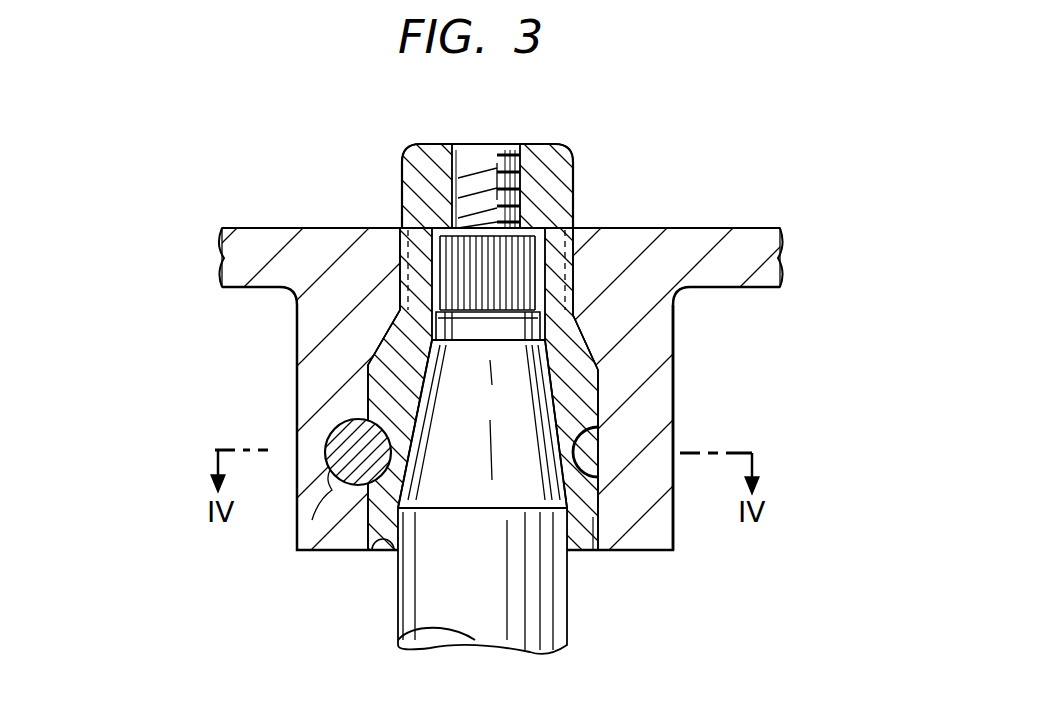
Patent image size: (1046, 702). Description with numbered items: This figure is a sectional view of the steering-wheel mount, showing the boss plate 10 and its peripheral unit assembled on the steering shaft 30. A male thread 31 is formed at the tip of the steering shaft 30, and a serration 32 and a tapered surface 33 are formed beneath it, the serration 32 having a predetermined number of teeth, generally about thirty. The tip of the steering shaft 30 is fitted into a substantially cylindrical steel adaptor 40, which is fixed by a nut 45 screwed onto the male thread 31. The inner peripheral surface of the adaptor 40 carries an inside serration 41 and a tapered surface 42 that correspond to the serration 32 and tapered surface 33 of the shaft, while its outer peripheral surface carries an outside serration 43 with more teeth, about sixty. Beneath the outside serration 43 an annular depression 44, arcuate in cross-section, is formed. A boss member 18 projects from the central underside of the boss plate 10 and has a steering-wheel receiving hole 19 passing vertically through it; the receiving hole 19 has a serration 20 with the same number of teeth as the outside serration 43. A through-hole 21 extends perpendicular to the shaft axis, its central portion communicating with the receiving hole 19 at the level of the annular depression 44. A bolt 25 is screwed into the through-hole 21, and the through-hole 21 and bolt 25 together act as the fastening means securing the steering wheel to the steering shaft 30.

The boss plate 10 is at (697, 230).
The boss member 18 is at (676, 385).
The steering-wheel receiving hole 19 is at (382, 550).
The serration 20 is at (588, 240).
The through-hole 21 is at (344, 436).
The bolt 25 is at (345, 470).
The steering shaft 30 is at (570, 613).
The male thread 31 is at (448, 168).
The serration 32 is at (418, 212).
The tapered surface 33 is at (370, 520).
The adaptor 40 is at (593, 517).
The inside serration 41 is at (540, 218).
The tapered surface 42 is at (548, 385).
The outside serration 43 is at (396, 262).
The annular depression 44 is at (590, 472).
The nut 45 is at (535, 155).